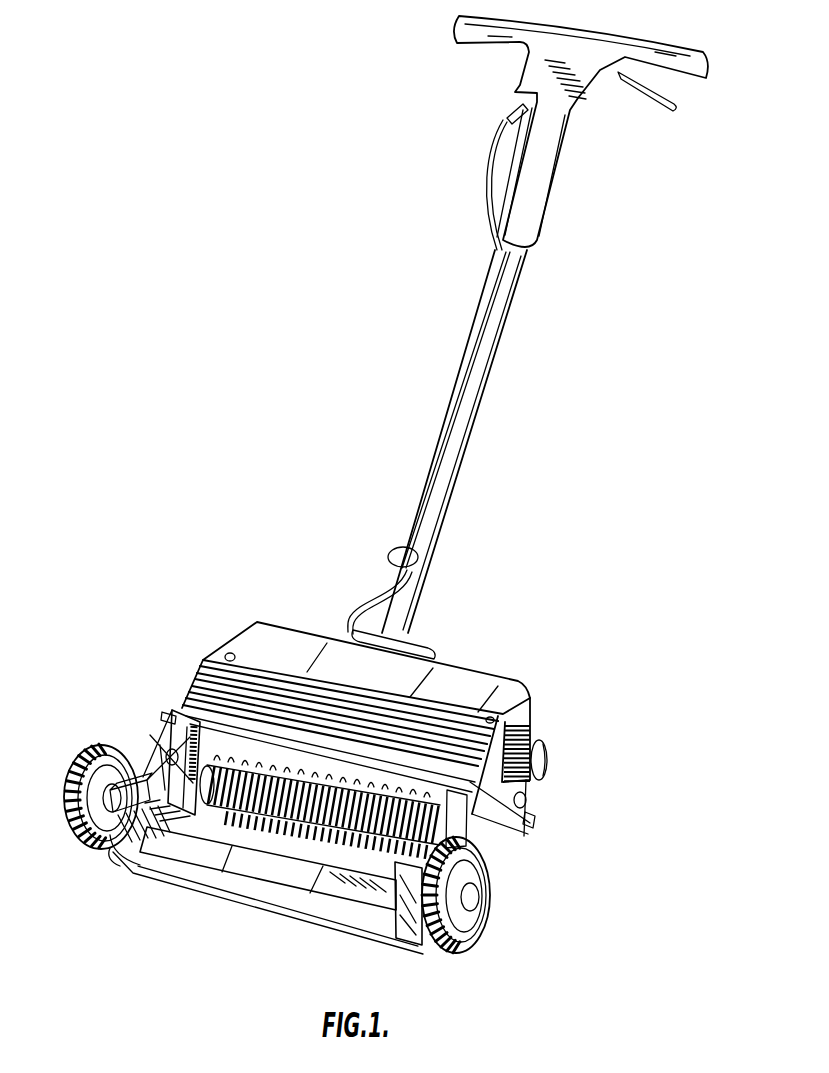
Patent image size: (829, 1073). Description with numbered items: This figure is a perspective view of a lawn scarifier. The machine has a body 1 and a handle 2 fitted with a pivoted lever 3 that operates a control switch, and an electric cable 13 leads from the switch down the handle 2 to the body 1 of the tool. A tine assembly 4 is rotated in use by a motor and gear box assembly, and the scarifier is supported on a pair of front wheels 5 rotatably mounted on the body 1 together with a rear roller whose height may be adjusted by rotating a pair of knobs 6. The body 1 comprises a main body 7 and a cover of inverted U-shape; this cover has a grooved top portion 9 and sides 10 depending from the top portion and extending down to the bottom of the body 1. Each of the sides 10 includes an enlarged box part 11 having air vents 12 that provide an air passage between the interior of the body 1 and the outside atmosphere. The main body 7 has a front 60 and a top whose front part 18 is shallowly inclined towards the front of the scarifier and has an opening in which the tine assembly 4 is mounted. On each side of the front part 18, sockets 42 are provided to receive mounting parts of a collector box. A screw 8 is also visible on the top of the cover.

The body 1 is at (505, 665).
The handle 2 is at (470, 407).
The pivoted lever 3 is at (650, 90).
The tine assembly 4 is at (517, 833).
The front wheels 5 is at (83, 848).
The knobs 6 is at (548, 762).
The main body 7 is at (143, 773).
The fastening screw 8 is at (226, 648).
The grooved top portion 9 is at (507, 697).
The sides 10 is at (520, 717).
The enlarged box part 11 is at (526, 803).
The air vents 12 is at (532, 820).
The electric cable 13 is at (473, 350).
The front part 18 is at (197, 833).
The sockets 42 is at (420, 853).
The front 60 is at (277, 884).